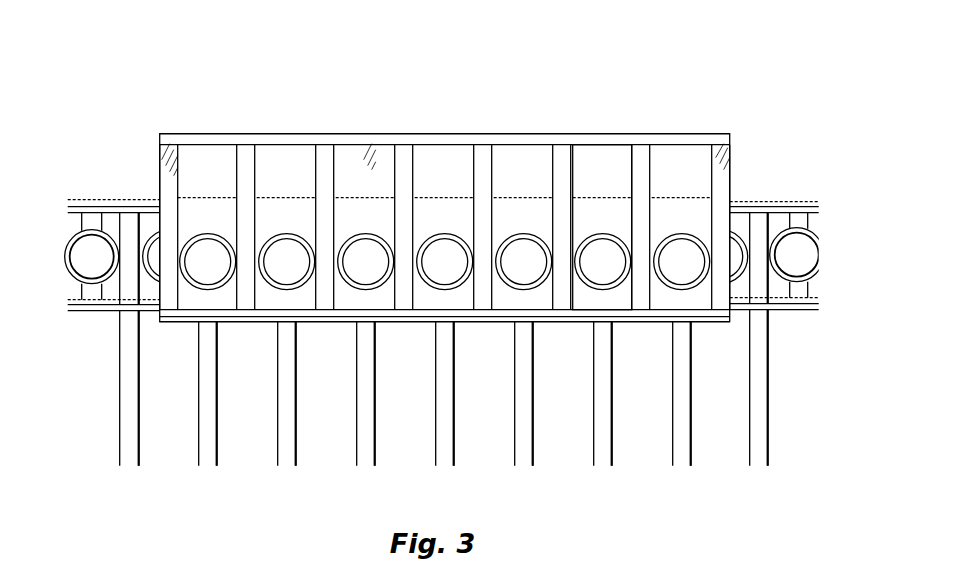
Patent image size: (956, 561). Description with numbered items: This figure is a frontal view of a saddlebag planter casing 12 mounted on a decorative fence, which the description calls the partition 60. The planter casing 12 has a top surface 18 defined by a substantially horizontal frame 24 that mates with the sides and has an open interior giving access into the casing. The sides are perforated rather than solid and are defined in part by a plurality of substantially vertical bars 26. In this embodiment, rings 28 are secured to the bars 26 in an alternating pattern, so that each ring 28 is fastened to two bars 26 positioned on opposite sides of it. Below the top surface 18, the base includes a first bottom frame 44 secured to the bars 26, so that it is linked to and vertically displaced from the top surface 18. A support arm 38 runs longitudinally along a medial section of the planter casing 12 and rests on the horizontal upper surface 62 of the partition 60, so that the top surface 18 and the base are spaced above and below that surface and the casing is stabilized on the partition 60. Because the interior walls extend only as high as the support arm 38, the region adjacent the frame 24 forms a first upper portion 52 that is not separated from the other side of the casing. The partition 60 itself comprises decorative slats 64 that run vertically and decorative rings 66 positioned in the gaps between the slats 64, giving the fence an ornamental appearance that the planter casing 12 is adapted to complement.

The planter casing 12 is at (171, 78).
The top surface 18 is at (684, 134).
The frame 24 is at (277, 138).
The bars 26 is at (247, 300).
The rings 28 is at (297, 288).
The support arm 38 is at (597, 186).
The first bottom frame 44 is at (706, 325).
The first upper portion 52 is at (362, 186).
The partition 60 is at (120, 190).
The horizontal upper surface 62 is at (778, 202).
The slats 64 is at (130, 410).
The rings 66 is at (112, 292).